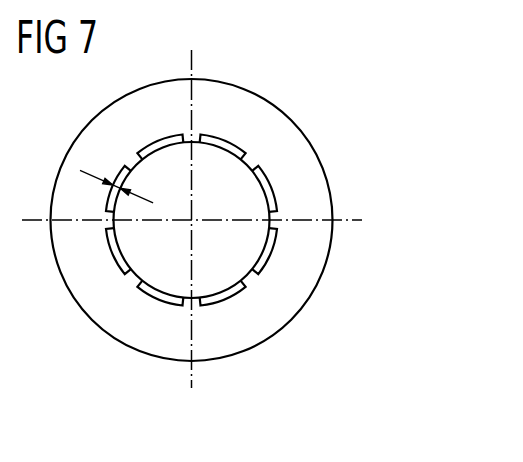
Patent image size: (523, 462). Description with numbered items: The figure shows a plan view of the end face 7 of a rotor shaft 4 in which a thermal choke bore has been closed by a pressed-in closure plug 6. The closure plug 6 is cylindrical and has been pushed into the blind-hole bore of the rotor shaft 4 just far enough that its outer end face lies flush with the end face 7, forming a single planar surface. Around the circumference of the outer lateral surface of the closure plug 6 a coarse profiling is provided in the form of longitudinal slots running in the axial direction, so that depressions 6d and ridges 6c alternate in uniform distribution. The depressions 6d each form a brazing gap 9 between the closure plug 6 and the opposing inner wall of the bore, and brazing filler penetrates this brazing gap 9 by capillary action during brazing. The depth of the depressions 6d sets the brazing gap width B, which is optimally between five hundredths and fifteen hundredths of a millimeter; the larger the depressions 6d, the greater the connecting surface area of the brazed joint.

The rotor shaft 4 is at (307, 135).
The end face 7 is at (315, 178).
The closure plug 6 is at (242, 247).
The ridges 6c is at (130, 152).
The depressions 6d is at (122, 258).
The brazing gap 9 is at (228, 300).
The brazing gap width B is at (115, 183).